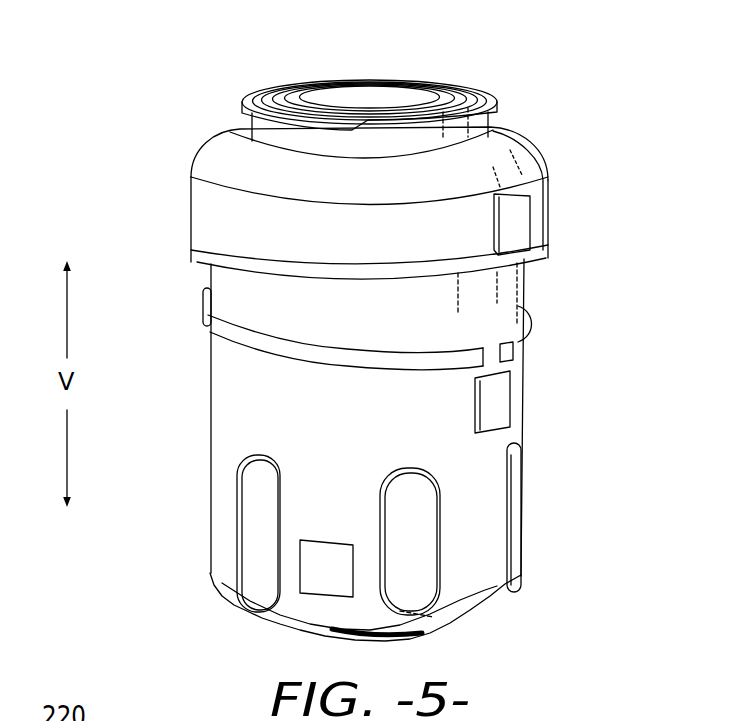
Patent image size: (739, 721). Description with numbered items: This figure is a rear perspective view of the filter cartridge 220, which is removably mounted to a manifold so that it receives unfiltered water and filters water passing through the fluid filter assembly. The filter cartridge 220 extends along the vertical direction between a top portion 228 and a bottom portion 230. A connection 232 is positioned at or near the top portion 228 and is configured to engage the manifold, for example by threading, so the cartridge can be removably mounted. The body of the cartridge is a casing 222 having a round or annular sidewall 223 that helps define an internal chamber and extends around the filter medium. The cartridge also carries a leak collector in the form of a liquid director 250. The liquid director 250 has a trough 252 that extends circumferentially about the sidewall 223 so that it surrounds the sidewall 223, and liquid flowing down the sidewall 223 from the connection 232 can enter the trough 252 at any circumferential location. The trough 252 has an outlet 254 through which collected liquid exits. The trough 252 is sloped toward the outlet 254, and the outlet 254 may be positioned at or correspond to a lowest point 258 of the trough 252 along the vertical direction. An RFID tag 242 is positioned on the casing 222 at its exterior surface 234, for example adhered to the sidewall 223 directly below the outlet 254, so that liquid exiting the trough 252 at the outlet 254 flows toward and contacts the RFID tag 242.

The filter cartridge 220 is at (205, 143).
The casing 222 is at (488, 540).
The sidewall 223 is at (212, 408).
The top portion 228 is at (513, 122).
The bottom portion 230 is at (520, 604).
The connection 232 is at (463, 82).
The exterior surface 234 is at (492, 497).
The RFID tag 242 is at (497, 400).
The liquid director 250 is at (337, 355).
The trough 252 is at (205, 290).
The outlet 254 is at (492, 328).
The lowest point 258 is at (514, 355).